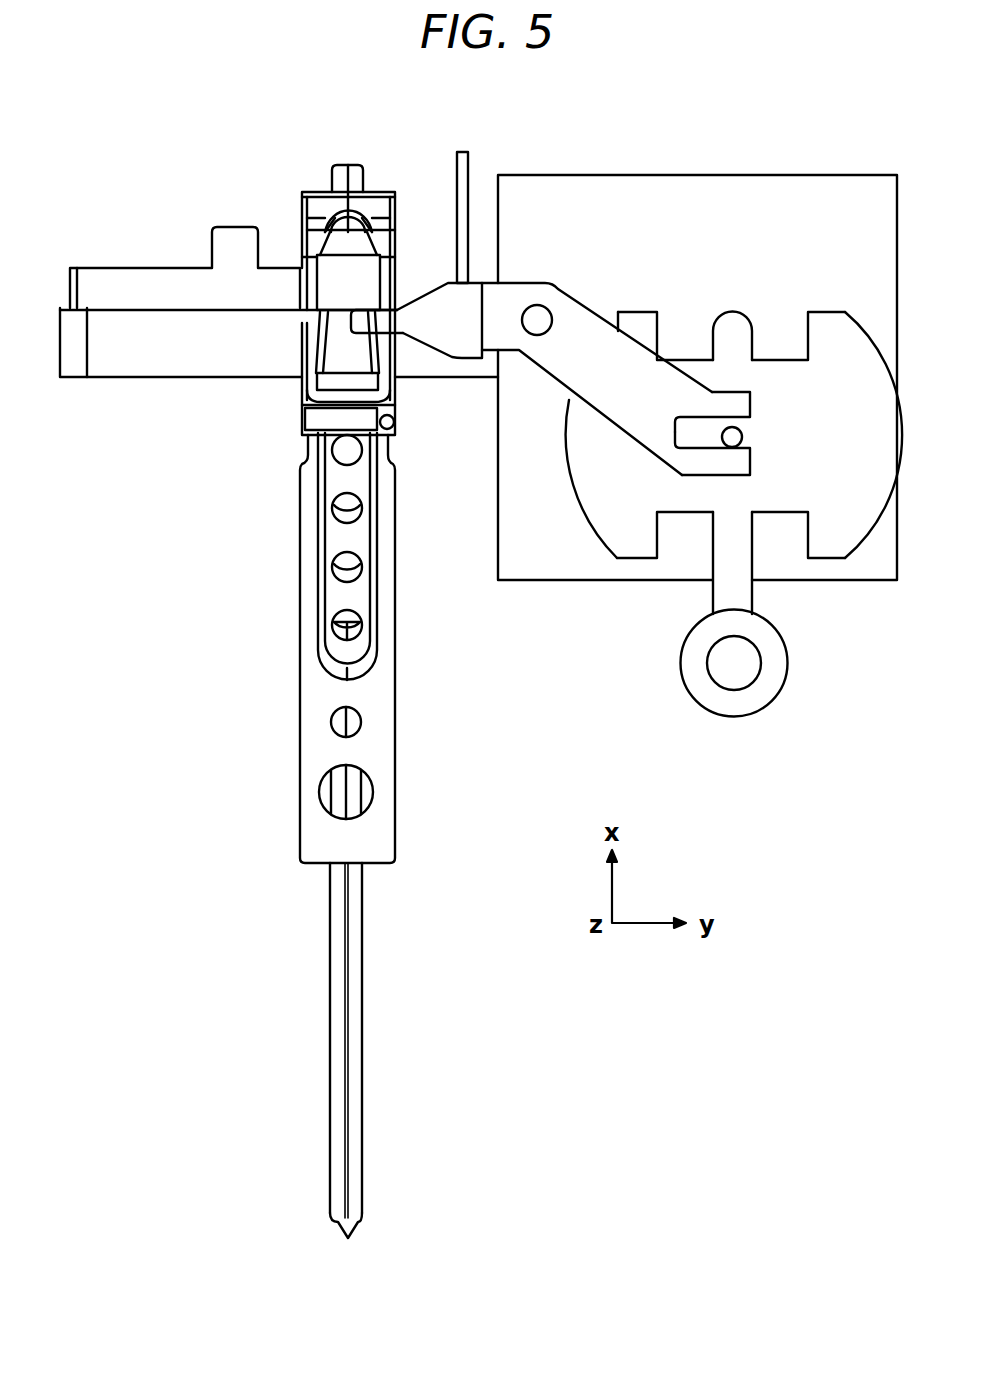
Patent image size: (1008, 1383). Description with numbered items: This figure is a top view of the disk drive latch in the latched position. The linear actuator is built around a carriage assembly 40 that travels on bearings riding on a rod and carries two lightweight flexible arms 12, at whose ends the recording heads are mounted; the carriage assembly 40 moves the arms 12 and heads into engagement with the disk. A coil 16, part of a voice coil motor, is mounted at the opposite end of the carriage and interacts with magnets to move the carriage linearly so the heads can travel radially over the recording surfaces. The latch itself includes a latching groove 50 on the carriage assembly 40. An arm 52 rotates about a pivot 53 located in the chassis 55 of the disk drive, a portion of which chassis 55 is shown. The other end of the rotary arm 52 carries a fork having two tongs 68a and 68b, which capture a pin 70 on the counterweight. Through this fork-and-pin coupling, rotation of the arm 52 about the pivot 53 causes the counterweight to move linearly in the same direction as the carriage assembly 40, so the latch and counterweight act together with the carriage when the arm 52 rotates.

The flexible arm 12 is at (362, 1082).
The coil 16 is at (136, 358).
The carriage assembly 40 is at (397, 768).
The latching groove 50 is at (338, 353).
The arm 52 is at (597, 312).
The pivot 53 is at (537, 304).
The chassis 55 is at (842, 230).
The tong 68a is at (752, 410).
The tong 68b is at (752, 462).
The pin 70 is at (745, 437).